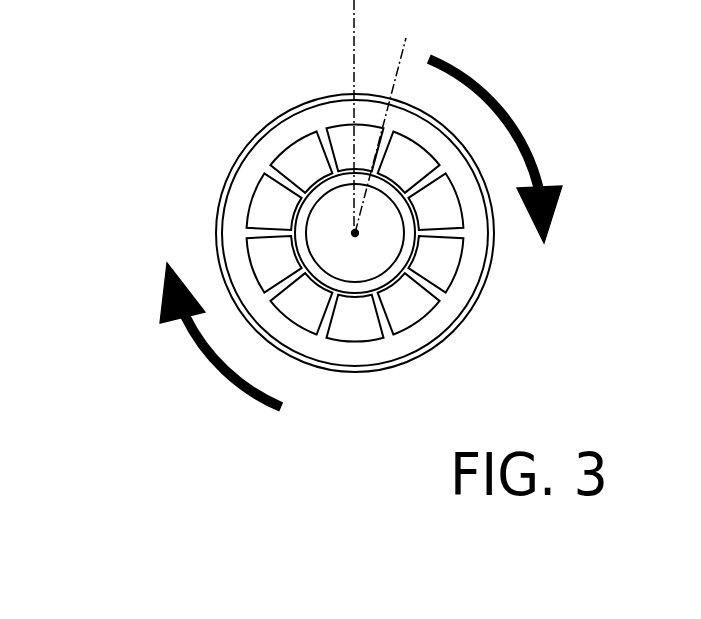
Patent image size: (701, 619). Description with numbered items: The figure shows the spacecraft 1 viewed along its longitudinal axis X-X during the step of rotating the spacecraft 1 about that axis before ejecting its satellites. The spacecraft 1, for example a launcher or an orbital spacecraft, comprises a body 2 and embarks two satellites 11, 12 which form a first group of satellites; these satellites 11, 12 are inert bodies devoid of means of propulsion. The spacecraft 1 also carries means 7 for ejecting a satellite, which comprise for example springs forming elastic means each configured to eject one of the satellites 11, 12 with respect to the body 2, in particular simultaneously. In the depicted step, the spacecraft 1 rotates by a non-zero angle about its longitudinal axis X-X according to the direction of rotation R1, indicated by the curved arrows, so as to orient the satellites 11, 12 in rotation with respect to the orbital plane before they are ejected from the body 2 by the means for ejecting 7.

The spacecraft 1 is at (136, 146).
The body 2 is at (488, 275).
The means for ejecting a satellite 7 is at (393, 275).
The satellite 11 is at (307, 315).
The satellite 12 is at (402, 160).
The longitudinal axis X-X is at (355, 233).
The direction of rotation R1 is at (517, 120).